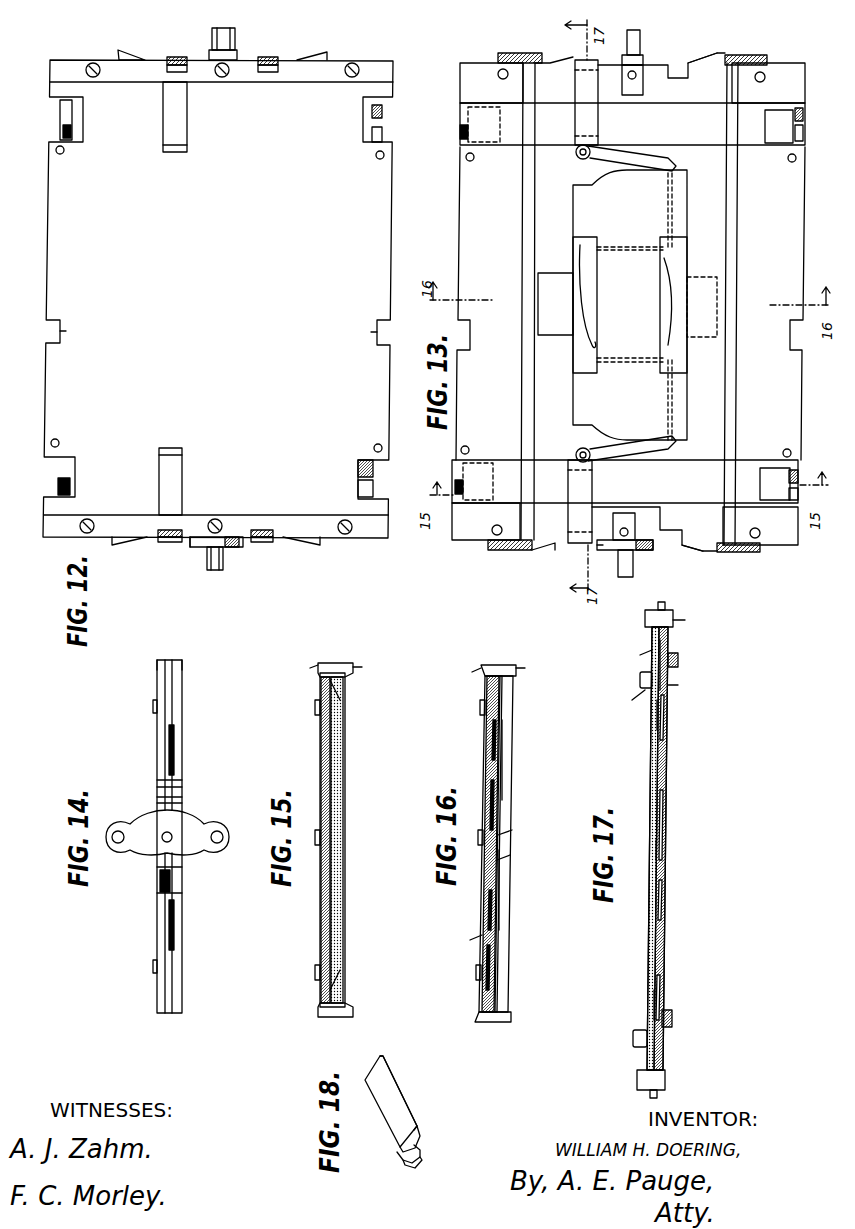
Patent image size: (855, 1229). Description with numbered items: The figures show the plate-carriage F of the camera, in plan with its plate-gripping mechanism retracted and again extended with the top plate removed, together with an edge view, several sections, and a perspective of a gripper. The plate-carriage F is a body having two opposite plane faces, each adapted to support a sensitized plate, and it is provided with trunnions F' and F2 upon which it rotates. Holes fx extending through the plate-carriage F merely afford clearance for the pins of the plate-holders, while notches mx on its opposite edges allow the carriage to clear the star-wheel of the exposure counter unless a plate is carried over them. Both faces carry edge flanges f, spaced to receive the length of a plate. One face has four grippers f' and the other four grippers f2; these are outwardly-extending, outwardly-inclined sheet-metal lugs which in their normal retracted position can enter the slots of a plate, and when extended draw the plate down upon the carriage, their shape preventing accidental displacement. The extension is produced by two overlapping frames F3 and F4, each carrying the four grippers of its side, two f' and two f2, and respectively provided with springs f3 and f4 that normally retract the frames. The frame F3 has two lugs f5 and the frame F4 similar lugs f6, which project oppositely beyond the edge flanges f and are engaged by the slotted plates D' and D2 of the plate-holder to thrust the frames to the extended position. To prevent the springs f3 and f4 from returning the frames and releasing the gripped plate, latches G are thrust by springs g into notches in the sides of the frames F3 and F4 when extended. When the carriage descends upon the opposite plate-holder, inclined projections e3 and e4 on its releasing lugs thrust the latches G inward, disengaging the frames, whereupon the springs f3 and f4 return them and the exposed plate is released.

In FIG. 12, the plate-carriage F is at (218, 299).
In FIG. 13, the plate-carriage F is at (630, 304).
In FIG. 14, the plate-carriage F is at (169, 836).
In FIG. 15, the plate-carriage F is at (348, 840).
In FIG. 16, the plate-carriage F is at (495, 843).
In FIG. 17, the plate-carriage F is at (655, 850).
In FIG. 12, the trunnion F' is at (222, 299).
In FIG. 13, the trunnion F' is at (658, 302).
In FIG. 12, the trunnion F2 is at (223, 562).
In FIG. 13, the trunnion F2 is at (618, 565).
In FIG. 14, the trunnion F2 is at (165, 832).
In FIG. 13, the gripping frame F3 is at (665, 305).
In FIG. 15, the gripping frame F3 is at (340, 700).
In FIG. 16, the gripping frame F3 is at (499, 905).
In FIG. 17, the gripping frame F3 is at (678, 660).
In FIG. 13, the gripping frame F4 is at (628, 303).
In FIG. 15, the gripping frame F4 is at (330, 985).
In FIG. 16, the gripping frame F4 is at (502, 780).
In FIG. 17, the gripping frame F4 is at (660, 645).
In FIG. 18, the gripping frame F4 is at (395, 1090).
In FIG. 12, the hub Fx is at (239, 545).
In FIG. 13, the hub Fx is at (650, 555).
In FIG. 14, the hub Fx is at (118, 843).
In FIG. 12, the latch G is at (173, 298).
In FIG. 13, the latch G is at (583, 301).
In FIG. 14, the latch G is at (170, 880).
In FIG. 15, the latch G is at (320, 838).
In FIG. 17, the latch G is at (630, 690).
In FIG. 13, the spring g is at (628, 162).
In FIG. 17, the spring g is at (657, 725).
In FIG. 12, the edge flange f is at (219, 298).
In FIG. 14, the edge flange f is at (166, 836).
In FIG. 15, the edge flange f is at (333, 840).
In FIG. 16, the edge flange f is at (491, 942).
In FIG. 17, the edge flange f is at (629, 879).
In FIG. 12, the gripper f' is at (222, 302).
In FIG. 13, the gripper f' is at (631, 327).
In FIG. 14, the gripper f' is at (139, 840).
In FIG. 15, the gripper f' is at (301, 841).
In FIG. 16, the gripper f' is at (463, 845).
In FIG. 17, the gripper f' is at (629, 885).
In FIG. 18, the gripper f' is at (392, 1153).
In FIG. 12, the gripper f2 is at (60, 105).
In FIG. 13, the gripper f2 is at (462, 112).
In FIG. 14, the gripper f2 is at (182, 665).
In FIG. 15, the gripper f2 is at (353, 1010).
In FIG. 16, the gripper f2 is at (520, 1018).
In FIG. 17, the gripper f2 is at (664, 1030).
In FIG. 18, the gripper f2 is at (420, 1155).
In FIG. 13, the spring f3 is at (597, 300).
In FIG. 16, the spring f3 is at (510, 859).
In FIG. 17, the spring f3 is at (655, 850).
In FIG. 13, the spring f4 is at (667, 300).
In FIG. 16, the spring f4 is at (515, 834).
In FIG. 12, the lug f5 is at (125, 50).
In FIG. 13, the lug f5 is at (550, 55).
In FIG. 14, the lug f5 is at (174, 925).
In FIG. 17, the lug f5 is at (675, 1082).
In FIG. 12, the lug f6 is at (315, 52).
In FIG. 13, the lug f6 is at (705, 58).
In FIG. 14, the lug f6 is at (169, 745).
In FIG. 12, the hole fx is at (63, 153).
In FIG. 13, the hole fx is at (473, 160).
In FIG. 12, the inclined projection e3 is at (177, 57).
In FIG. 12, the inclined projection e4 is at (170, 542).
In FIG. 12, the notch mx is at (218, 335).
In FIG. 13, the slotted plate D' is at (497, 302).
In FIG. 13, the slotted plate D2 is at (750, 55).